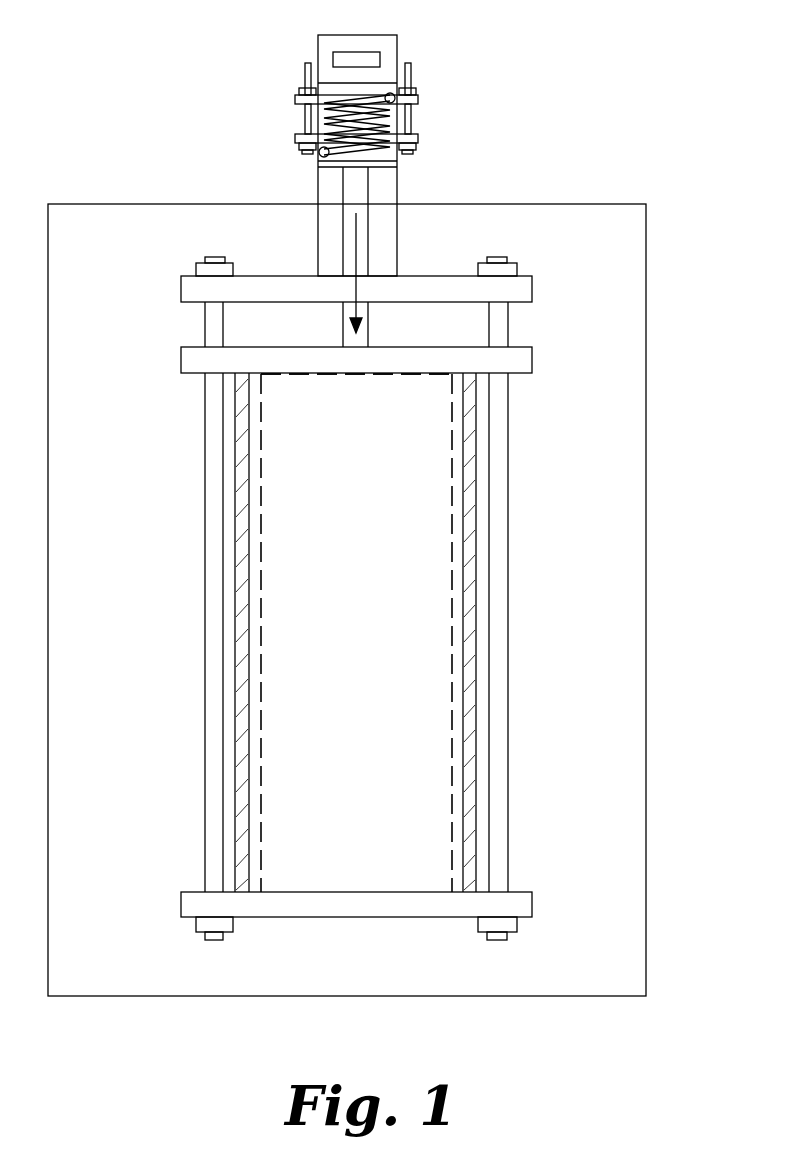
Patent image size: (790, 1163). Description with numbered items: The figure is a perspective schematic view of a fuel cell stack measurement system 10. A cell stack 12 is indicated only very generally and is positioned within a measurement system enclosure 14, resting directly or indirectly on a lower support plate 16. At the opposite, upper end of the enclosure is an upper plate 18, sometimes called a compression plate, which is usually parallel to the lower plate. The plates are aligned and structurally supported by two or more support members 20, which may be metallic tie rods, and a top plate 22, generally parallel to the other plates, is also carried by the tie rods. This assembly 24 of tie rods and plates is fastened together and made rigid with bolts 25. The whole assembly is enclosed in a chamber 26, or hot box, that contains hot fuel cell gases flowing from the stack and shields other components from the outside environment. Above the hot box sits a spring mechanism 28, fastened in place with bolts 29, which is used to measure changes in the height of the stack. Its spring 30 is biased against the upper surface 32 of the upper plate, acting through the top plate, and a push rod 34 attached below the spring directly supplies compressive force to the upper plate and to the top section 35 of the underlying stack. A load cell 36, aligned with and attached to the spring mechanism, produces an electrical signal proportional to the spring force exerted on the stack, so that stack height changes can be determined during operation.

The fuel cell stack measurement system 10 is at (267, 149).
The cell stack 12 is at (282, 508).
The measurement system enclosure 14 is at (256, 690).
The lower support plate 16 is at (398, 920).
The upper plate 18 is at (527, 362).
The support members 20 is at (205, 432).
The top plate 22 is at (527, 292).
The assembly 24 is at (200, 936).
The bolts 25 is at (205, 262).
The chamber 26 is at (636, 555).
The spring mechanism 28 is at (432, 108).
The bolts 29 is at (305, 120).
The spring 30 is at (365, 149).
The upper surface 32 is at (402, 347).
The push rod 34 is at (343, 196).
The top section 35 is at (325, 372).
The load cell 36 is at (333, 60).